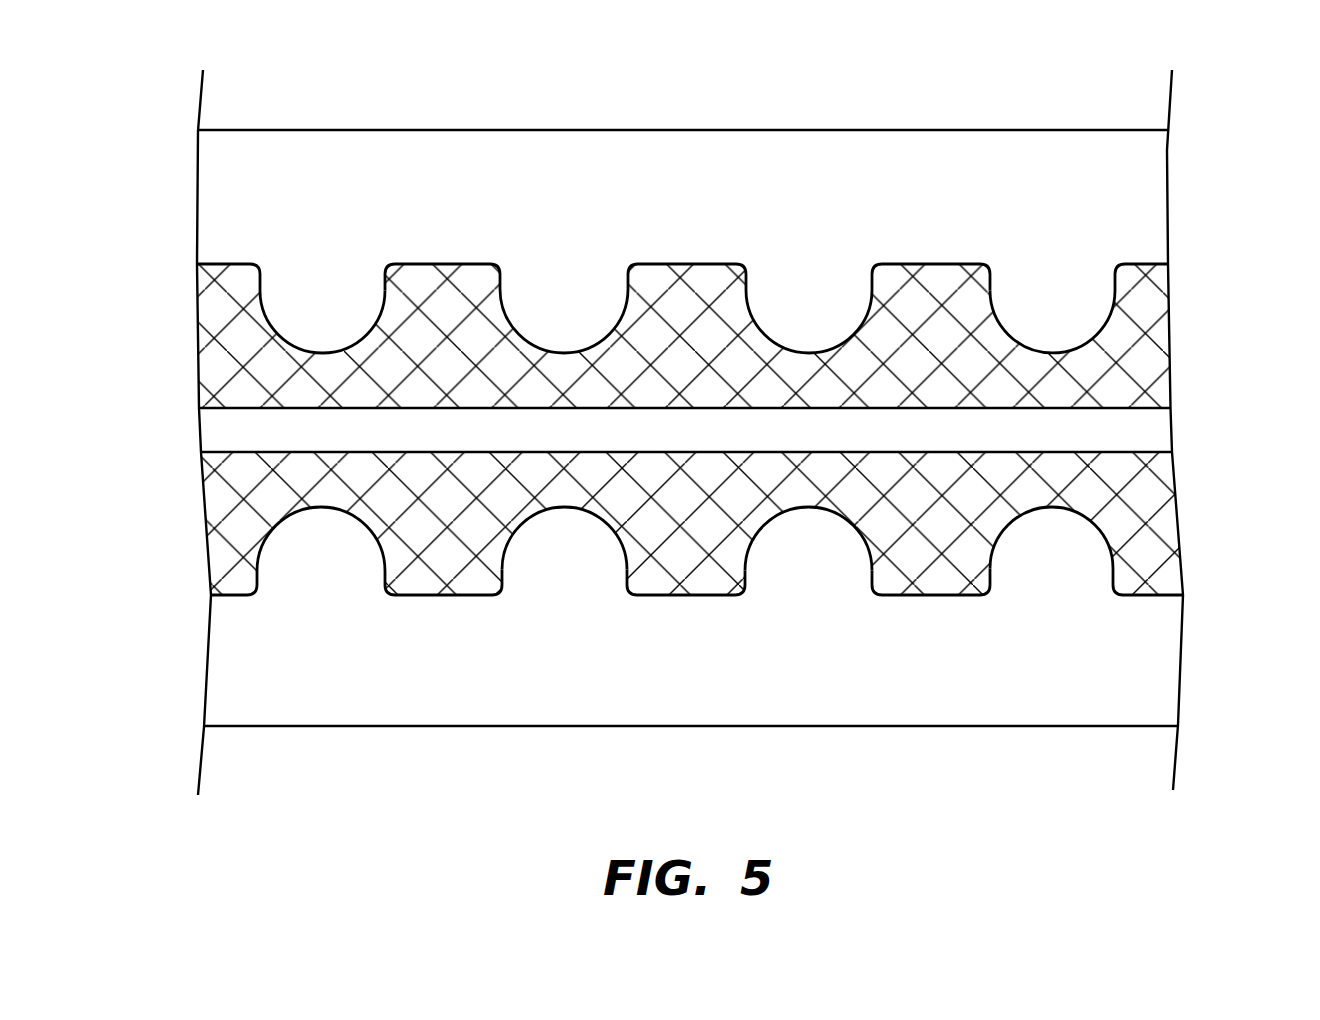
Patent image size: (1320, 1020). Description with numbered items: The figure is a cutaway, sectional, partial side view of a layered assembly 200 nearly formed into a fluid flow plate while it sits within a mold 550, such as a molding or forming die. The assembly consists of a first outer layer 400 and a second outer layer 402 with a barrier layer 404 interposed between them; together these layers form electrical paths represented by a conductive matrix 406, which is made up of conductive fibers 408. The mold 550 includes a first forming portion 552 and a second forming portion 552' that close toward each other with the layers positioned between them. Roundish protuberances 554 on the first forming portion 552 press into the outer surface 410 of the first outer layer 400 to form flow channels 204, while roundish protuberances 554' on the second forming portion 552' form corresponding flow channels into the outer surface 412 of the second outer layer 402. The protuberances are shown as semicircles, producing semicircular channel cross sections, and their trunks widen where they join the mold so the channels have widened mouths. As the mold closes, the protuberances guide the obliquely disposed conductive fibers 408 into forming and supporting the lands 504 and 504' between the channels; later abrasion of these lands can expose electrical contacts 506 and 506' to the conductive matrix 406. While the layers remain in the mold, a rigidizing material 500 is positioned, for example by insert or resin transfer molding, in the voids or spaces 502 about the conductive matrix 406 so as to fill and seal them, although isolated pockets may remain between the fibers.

The belt assembly 200 is at (1138, 248).
The flow channel 204 is at (564, 261).
The first outer layer 400 is at (1178, 310).
The second outer layer 402 is at (1195, 520).
The barrier layer 404 is at (1158, 433).
The conductive matrix 406 is at (1017, 380).
The conductive fibers 408 is at (687, 327).
The outer surface 410 is at (950, 233).
The outer surface 412 is at (920, 612).
The rigidizing material 500 is at (710, 337).
The spaces 502 is at (418, 337).
The land 504 is at (442, 230).
The land 504' is at (443, 632).
The electrical contact 506 is at (915, 230).
The electrical contact 506' is at (686, 632).
The mold 550 is at (897, 110).
The first forming portion 552 is at (683, 96).
The second forming portion 552' is at (691, 742).
The roundish protuberance 554 is at (809, 261).
The roundish protuberance 554' is at (808, 600).